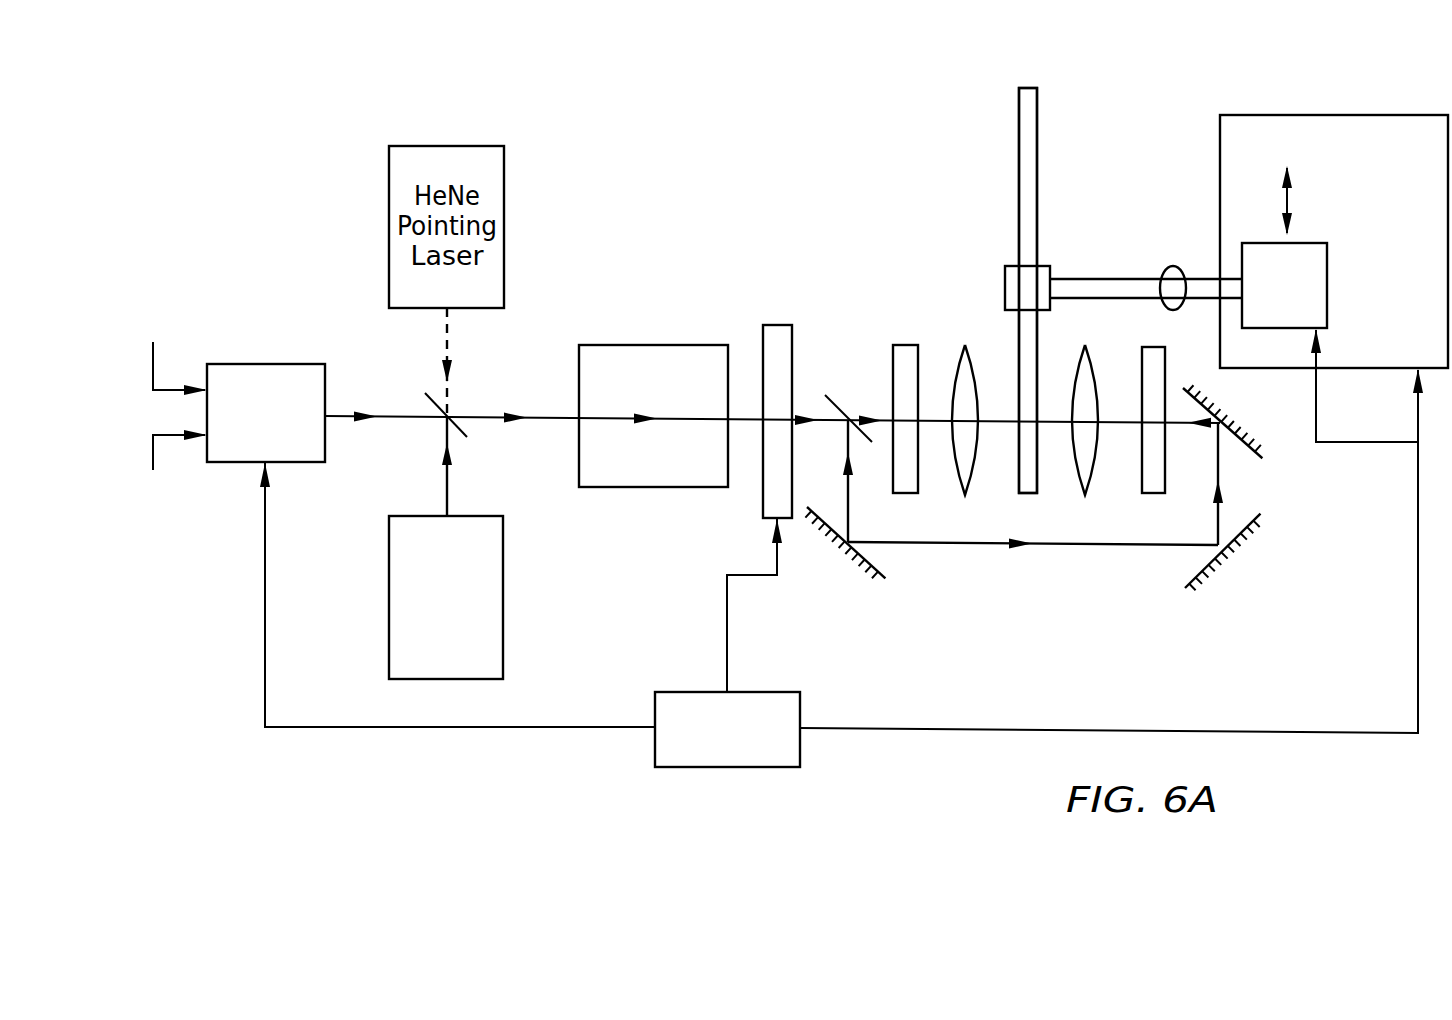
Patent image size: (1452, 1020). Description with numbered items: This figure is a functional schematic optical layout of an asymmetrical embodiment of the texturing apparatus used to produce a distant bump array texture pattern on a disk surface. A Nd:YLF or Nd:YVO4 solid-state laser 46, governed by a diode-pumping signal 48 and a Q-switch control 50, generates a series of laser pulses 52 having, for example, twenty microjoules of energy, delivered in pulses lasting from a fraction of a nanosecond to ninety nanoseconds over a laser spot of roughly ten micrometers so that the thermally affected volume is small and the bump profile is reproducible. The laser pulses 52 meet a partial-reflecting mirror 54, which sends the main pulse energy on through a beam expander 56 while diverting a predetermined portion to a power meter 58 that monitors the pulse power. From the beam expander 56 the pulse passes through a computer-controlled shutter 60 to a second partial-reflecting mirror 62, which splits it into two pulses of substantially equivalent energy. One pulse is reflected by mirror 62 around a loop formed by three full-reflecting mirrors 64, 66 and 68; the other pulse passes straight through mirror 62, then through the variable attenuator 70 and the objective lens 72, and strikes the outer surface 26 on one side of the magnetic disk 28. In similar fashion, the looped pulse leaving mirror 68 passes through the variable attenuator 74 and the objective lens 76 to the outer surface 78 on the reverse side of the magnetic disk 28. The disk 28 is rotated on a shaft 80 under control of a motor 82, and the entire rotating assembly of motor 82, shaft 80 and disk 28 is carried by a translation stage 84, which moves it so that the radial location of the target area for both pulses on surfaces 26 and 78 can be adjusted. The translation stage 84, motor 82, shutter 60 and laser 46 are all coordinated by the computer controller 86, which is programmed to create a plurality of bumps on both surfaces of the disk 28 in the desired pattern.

The outer surface 26 is at (1018, 152).
The magnetic disk 28 is at (1028, 118).
The solid-state laser 46 is at (257, 363).
The diode-pumping signal 48 is at (181, 512).
The Q-switch control 50 is at (193, 338).
The laser pulses 52 is at (340, 417).
The partial-reflecting mirror 54 is at (467, 437).
The beam expander 56 is at (637, 459).
The power meter 58 is at (458, 651).
The computer-controlled shutter 60 is at (777, 325).
The second partial-reflecting mirror 62 is at (827, 395).
The full-reflecting mirror 64 is at (882, 577).
The full-reflecting mirror 66 is at (1187, 577).
The full-reflecting mirror 68 is at (1258, 457).
The variable attenuator 70 is at (900, 345).
The objective lens 72 is at (967, 353).
The variable attenuator 74 is at (1147, 493).
The objective lens 76 is at (1077, 480).
The outer surface 78 is at (1037, 177).
The shaft 80 is at (1068, 277).
The motor 82 is at (1269, 326).
The translation stage 84 is at (1394, 251).
The computer controller 86 is at (715, 767).